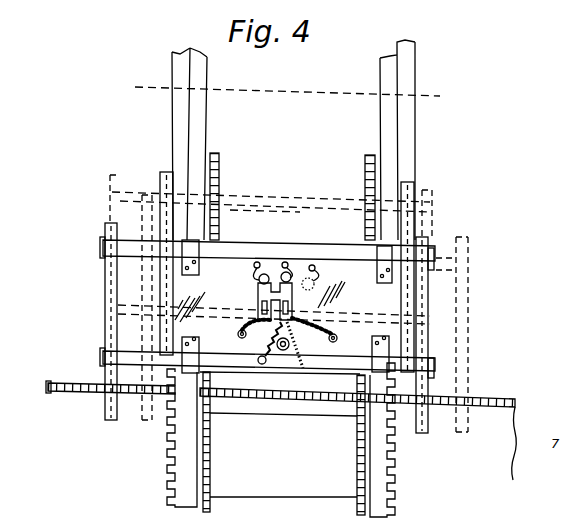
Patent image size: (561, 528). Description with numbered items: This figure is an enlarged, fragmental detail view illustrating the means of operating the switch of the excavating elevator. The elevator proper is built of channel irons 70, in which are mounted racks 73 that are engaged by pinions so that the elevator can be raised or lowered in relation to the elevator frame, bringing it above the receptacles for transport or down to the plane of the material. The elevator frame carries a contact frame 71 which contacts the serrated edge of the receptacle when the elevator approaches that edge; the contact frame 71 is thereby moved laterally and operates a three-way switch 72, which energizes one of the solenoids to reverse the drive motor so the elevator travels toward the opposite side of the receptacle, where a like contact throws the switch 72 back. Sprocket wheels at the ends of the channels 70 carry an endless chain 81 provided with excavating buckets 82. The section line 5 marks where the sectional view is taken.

The section line 5- 5 is at (286, 88).
The channel irons 70 is at (208, 122).
The contact frame 71 is at (105, 308).
The three-way switch 72 is at (257, 293).
The racks 73 is at (192, 490).
The endless chain 81 is at (373, 160).
The excavating buckets 82 is at (283, 455).